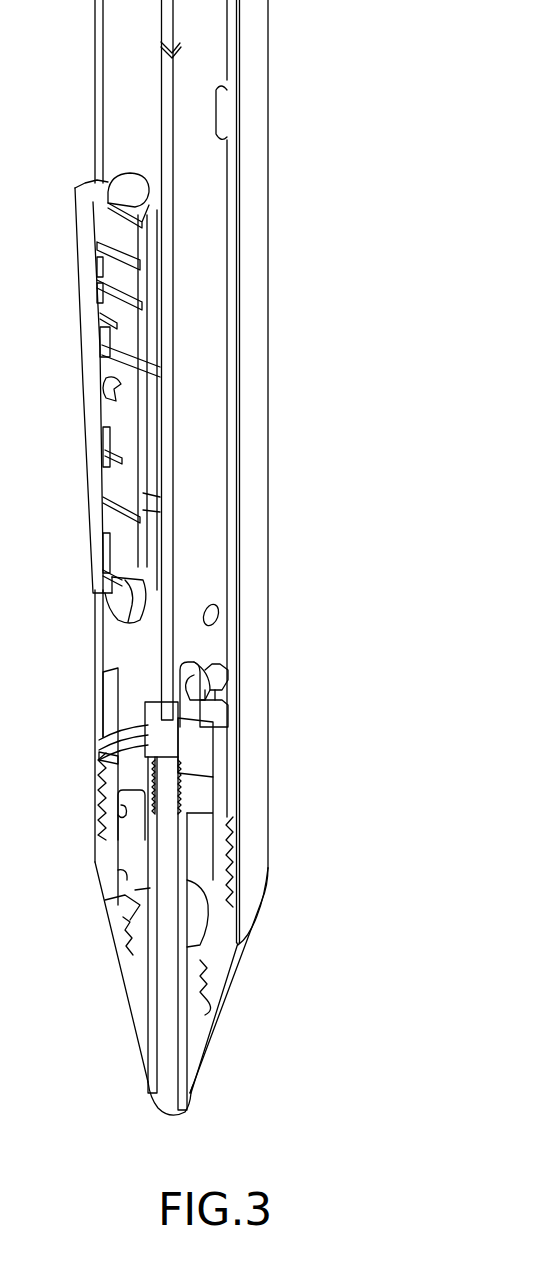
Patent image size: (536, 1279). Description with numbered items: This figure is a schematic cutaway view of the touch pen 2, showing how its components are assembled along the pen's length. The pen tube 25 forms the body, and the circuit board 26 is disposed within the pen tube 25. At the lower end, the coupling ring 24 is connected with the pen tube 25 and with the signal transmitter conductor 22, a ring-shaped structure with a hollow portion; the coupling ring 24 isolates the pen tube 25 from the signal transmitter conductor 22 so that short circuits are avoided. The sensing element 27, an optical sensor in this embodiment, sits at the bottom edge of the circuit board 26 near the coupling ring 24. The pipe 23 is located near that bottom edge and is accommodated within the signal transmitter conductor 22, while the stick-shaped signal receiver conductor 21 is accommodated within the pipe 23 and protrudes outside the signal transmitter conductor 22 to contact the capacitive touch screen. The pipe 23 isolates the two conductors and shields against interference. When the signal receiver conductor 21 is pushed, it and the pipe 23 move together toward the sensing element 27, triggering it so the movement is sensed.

The touch pen 2 is at (356, 59).
The signal receiver conductor 21 is at (165, 1102).
The signal transmitter conductor 22 is at (198, 1040).
The pipe 23 is at (150, 900).
The coupling ring 24 is at (238, 963).
The pen tube 25 is at (255, 382).
The circuit board 26 is at (210, 332).
The sensing element 27 is at (222, 707).